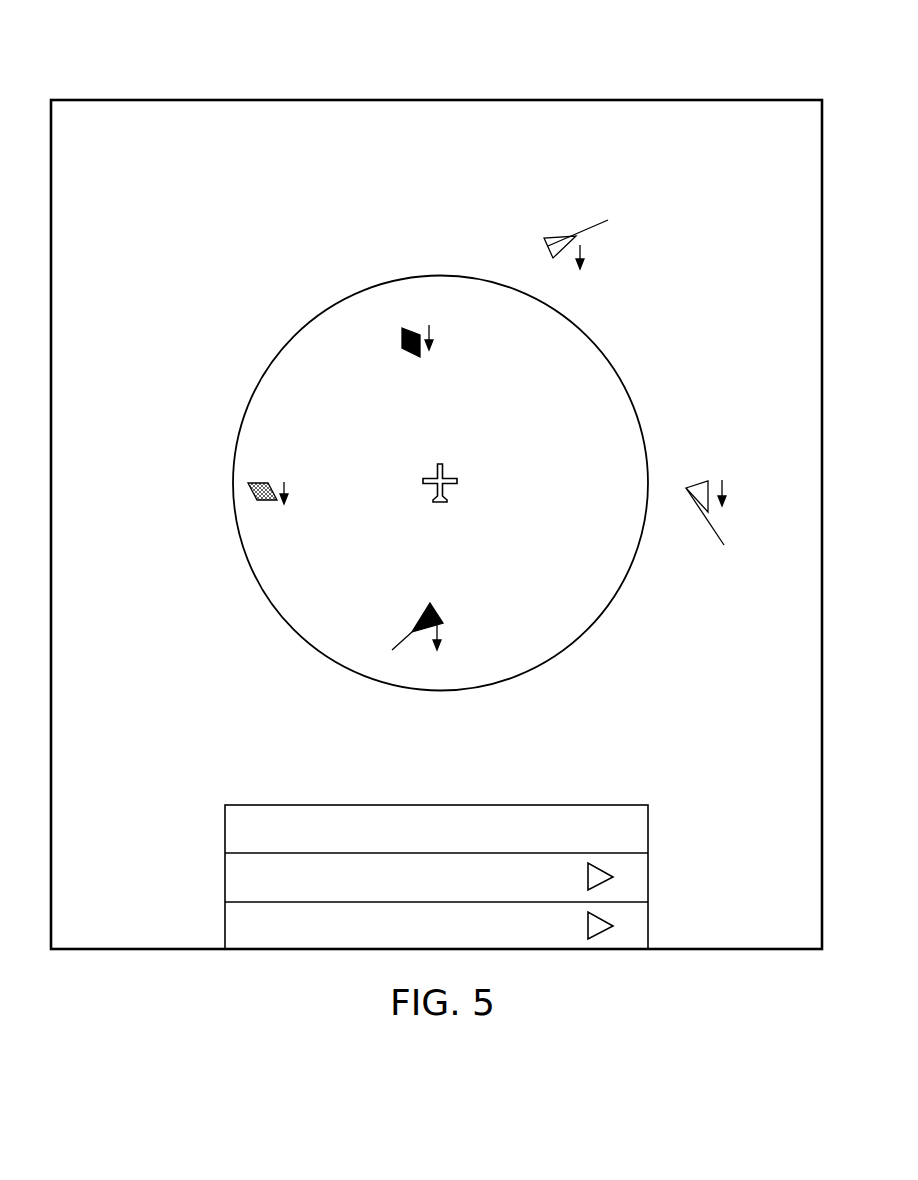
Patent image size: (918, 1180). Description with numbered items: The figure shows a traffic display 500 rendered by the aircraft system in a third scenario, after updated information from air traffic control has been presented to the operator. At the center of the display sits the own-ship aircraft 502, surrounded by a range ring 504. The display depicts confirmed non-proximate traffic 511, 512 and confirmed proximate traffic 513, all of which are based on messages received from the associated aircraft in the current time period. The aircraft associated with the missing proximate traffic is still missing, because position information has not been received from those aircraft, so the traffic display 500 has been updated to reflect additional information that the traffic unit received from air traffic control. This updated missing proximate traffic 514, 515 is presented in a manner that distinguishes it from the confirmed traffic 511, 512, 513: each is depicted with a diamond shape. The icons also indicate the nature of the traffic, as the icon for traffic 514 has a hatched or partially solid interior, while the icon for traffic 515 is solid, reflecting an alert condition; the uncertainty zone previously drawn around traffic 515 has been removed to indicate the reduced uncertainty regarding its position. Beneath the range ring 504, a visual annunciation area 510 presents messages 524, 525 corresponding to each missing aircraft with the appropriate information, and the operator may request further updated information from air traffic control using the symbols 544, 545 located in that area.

The traffic display 500 is at (484, 98).
The own-ship aircraft 502 is at (443, 470).
The range ring 504 is at (620, 380).
The missing traffic information table 510 is at (438, 852).
The confirmed non-proximate traffic 511 is at (598, 220).
The confirmed non-proximate traffic 512 is at (708, 481).
The confirmed proximate traffic 513 is at (437, 611).
The missing proximate traffic 514 is at (249, 487).
The missing proximate traffic 515 is at (402, 338).
The message 524 is at (243, 881).
The message 525 is at (243, 926).
The symbol 544 is at (613, 877).
The symbol 545 is at (613, 926).